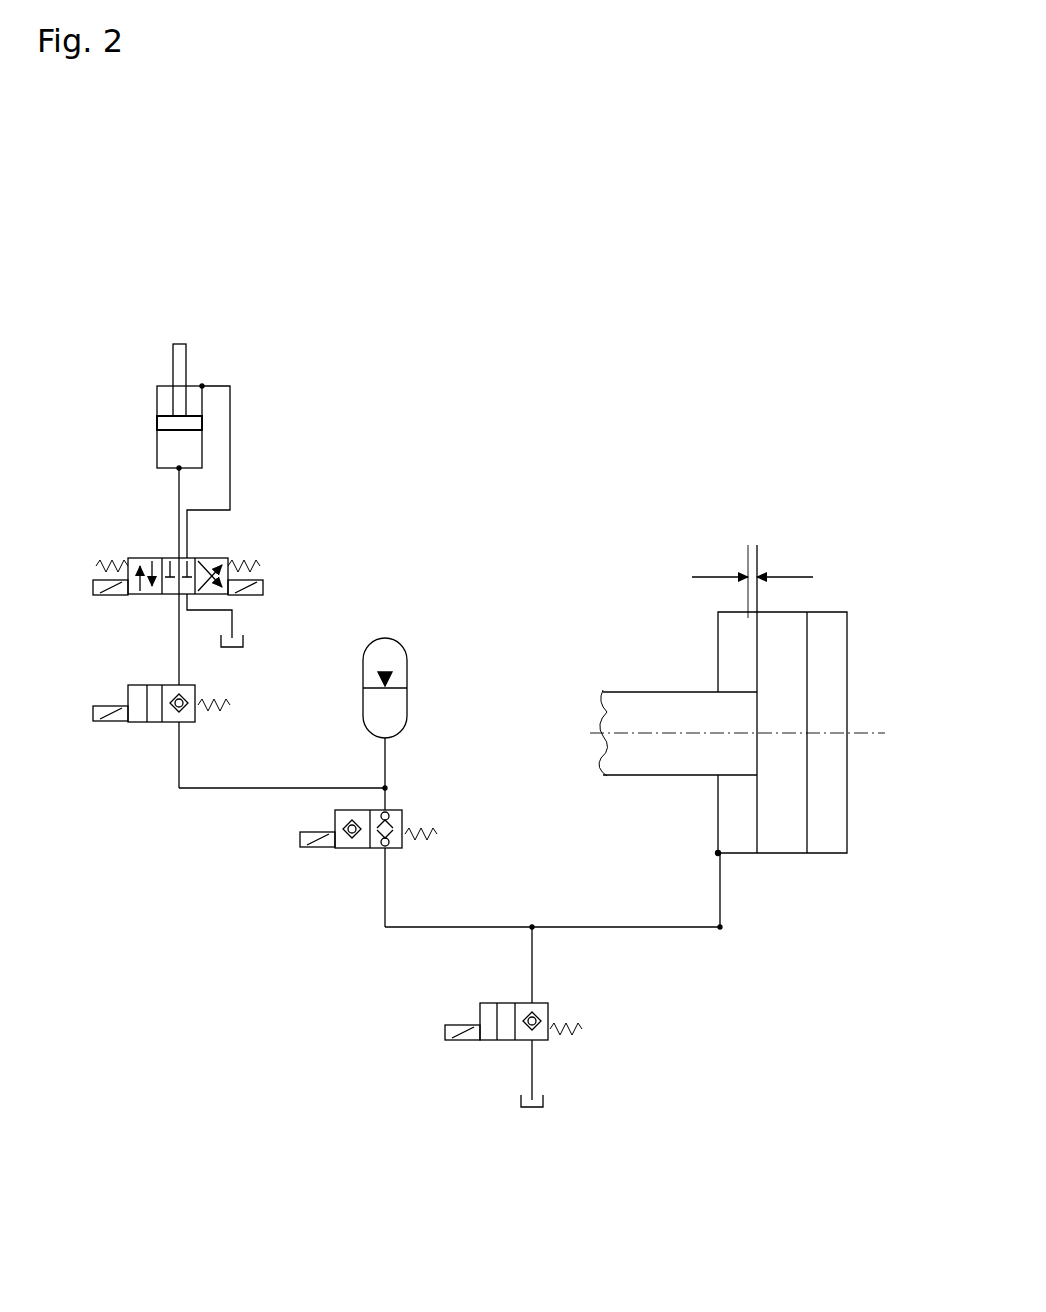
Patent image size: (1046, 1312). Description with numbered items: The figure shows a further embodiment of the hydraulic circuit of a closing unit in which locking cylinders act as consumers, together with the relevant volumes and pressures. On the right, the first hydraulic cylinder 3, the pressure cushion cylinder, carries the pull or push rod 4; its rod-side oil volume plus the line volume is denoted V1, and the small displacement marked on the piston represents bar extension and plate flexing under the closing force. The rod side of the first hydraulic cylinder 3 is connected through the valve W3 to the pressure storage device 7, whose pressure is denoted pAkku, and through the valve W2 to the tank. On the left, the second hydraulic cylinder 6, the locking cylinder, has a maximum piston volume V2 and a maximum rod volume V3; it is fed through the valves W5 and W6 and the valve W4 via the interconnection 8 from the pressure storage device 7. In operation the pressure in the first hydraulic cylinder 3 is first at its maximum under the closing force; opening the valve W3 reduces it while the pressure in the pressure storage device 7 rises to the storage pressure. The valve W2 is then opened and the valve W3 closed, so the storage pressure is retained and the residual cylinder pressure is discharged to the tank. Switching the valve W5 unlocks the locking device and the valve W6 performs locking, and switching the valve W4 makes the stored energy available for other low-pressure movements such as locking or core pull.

The second hydraulic cylinder 6 is at (150, 368).
The maximum rod volume of the locking cylinder V3 is at (160, 405).
The maximum piston volume of the locking cylinder V2 is at (170, 452).
The valve W5 is at (98, 605).
The valve W6 is at (245, 545).
The valve W4 is at (130, 745).
The interconnection 8 is at (147, 790).
The pressure storage device 7 is at (399, 632).
The accumulator pressure pAkku is at (403, 713).
The valve W3 is at (350, 880).
The valve W2 is at (470, 1065).
The first hydraulic cylinder 3 is at (828, 580).
The pull or push rod 4 is at (673, 705).
The oil volume on the rod side of the pressure cushion cylinder plus line volume V1 is at (735, 835).